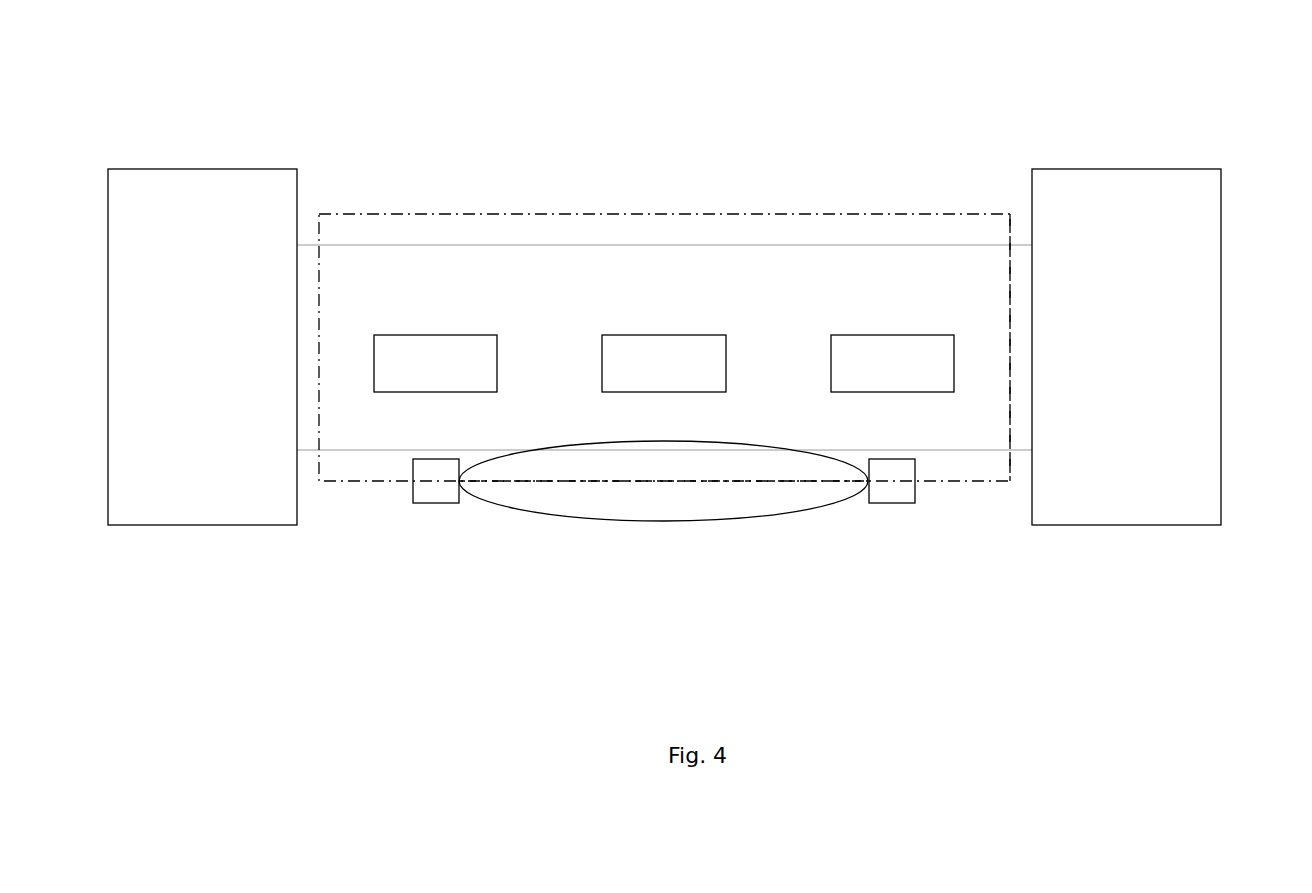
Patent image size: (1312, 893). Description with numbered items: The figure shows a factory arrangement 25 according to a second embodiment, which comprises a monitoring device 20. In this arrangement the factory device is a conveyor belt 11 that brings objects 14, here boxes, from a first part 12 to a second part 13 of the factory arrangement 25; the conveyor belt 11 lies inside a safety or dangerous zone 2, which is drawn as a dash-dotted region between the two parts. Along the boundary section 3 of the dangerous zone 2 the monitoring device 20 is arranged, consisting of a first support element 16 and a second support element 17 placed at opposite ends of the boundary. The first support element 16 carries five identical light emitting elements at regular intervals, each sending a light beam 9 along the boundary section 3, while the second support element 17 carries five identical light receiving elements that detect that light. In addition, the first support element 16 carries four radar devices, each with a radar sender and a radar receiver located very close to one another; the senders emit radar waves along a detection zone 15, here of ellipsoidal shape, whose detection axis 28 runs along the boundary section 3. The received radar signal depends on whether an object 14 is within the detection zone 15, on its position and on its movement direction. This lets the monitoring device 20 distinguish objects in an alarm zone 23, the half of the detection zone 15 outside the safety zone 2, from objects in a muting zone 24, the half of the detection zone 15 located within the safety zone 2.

The dangerous zone 2 is at (346, 214).
The boundary section 3 is at (745, 490).
The light beam 9 is at (800, 503).
The conveyor belt 11 is at (972, 247).
The first part 12 is at (182, 170).
The second part 13 is at (1095, 170).
The objects 14 is at (445, 335).
The detection zone 15 is at (522, 512).
The first support element 16 is at (425, 497).
The second support element 17 is at (888, 485).
The monitoring device 20 is at (347, 659).
The alarm zone 23 is at (622, 500).
The muting zone 24 is at (768, 462).
The factory arrangement 25 is at (1250, 103).
The detection axis 28 is at (667, 483).